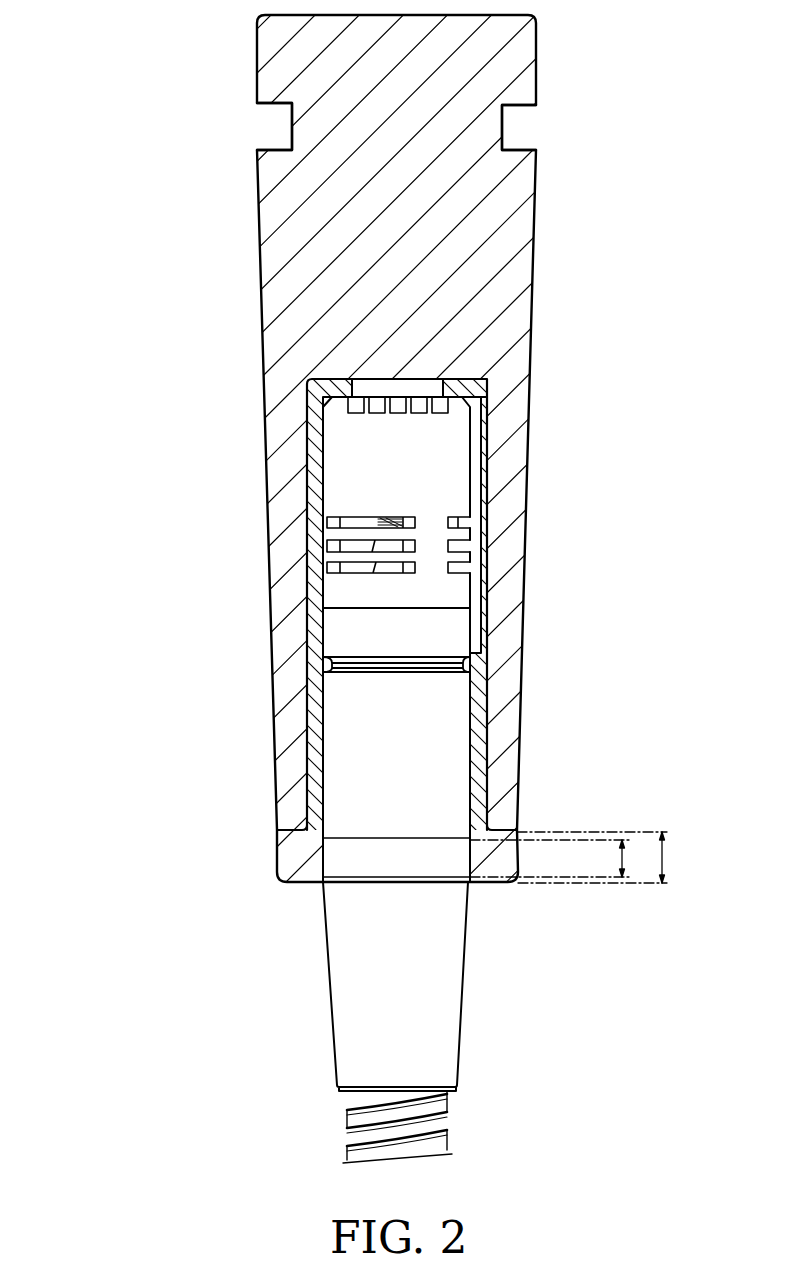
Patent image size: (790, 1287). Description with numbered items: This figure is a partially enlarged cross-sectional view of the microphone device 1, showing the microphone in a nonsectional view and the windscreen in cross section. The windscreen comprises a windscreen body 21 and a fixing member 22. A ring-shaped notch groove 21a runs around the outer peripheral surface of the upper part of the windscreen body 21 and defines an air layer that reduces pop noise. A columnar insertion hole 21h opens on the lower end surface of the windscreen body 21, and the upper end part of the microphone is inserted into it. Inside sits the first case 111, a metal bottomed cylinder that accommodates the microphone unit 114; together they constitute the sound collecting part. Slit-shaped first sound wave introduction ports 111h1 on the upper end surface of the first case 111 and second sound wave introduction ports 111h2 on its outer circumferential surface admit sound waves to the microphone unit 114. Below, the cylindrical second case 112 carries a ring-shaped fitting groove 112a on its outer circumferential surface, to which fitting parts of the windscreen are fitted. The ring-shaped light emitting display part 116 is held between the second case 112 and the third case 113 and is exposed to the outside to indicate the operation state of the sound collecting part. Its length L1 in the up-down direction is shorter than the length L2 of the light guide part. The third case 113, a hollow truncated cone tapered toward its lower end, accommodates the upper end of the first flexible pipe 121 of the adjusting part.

The microphone device 1 is at (127, 65).
The windscreen body 21 is at (536, 240).
The notch groove 21a is at (518, 105).
The fixing member 22 is at (488, 740).
The first case 111 is at (335, 480).
The first sound wave introduction ports 111h1 is at (348, 410).
The second sound wave introduction ports 111h2 is at (447, 523).
The microphone unit 114 is at (372, 523).
The insertion hole 21h is at (470, 530).
The fitting groove 112a is at (367, 660).
The second case 112 is at (348, 740).
The light emitting display part 116 is at (360, 858).
The length of the light emitting display part L1 is at (559, 858).
The length of the light guide part L2 is at (604, 857).
The third case 113 is at (330, 987).
The first flexible pipe 121 is at (448, 1128).